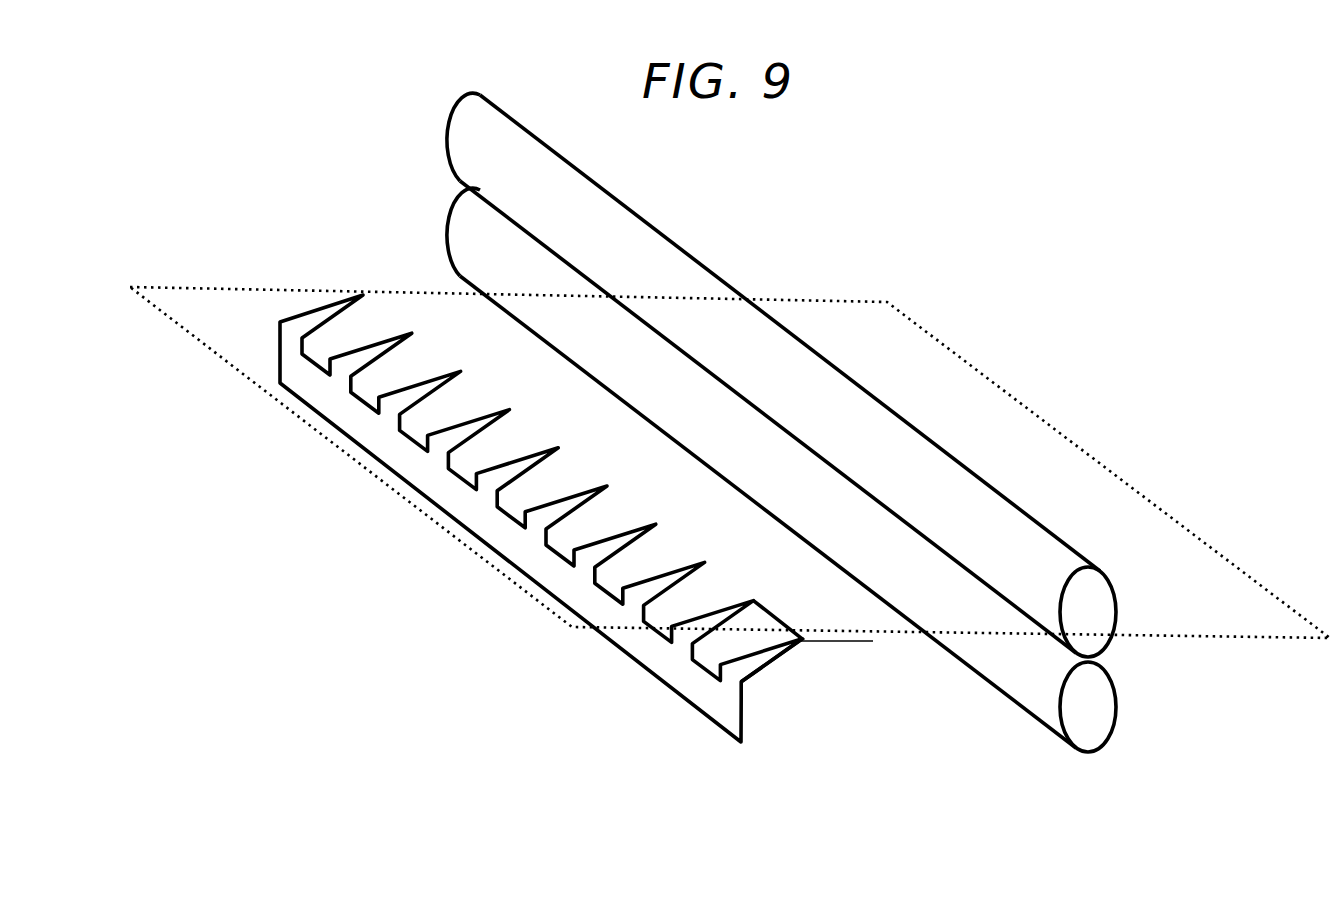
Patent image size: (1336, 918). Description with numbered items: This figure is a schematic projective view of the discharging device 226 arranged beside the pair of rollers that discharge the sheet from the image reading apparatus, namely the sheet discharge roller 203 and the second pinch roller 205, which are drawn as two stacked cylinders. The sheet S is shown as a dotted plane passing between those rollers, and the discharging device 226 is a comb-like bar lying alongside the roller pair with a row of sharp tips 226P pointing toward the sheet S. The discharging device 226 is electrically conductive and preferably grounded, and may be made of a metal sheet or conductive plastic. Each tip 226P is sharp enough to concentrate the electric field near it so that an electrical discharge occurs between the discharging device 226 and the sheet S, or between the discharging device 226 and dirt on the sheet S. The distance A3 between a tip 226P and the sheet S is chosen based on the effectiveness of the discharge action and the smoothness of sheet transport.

The second pinch roller 205 is at (1114, 581).
The sheet discharge roller 203 is at (1116, 708).
The discharging device 226 is at (680, 656).
The tip 226P is at (804, 640).
The sheet S is at (497, 573).
The distance A3 is at (861, 597).